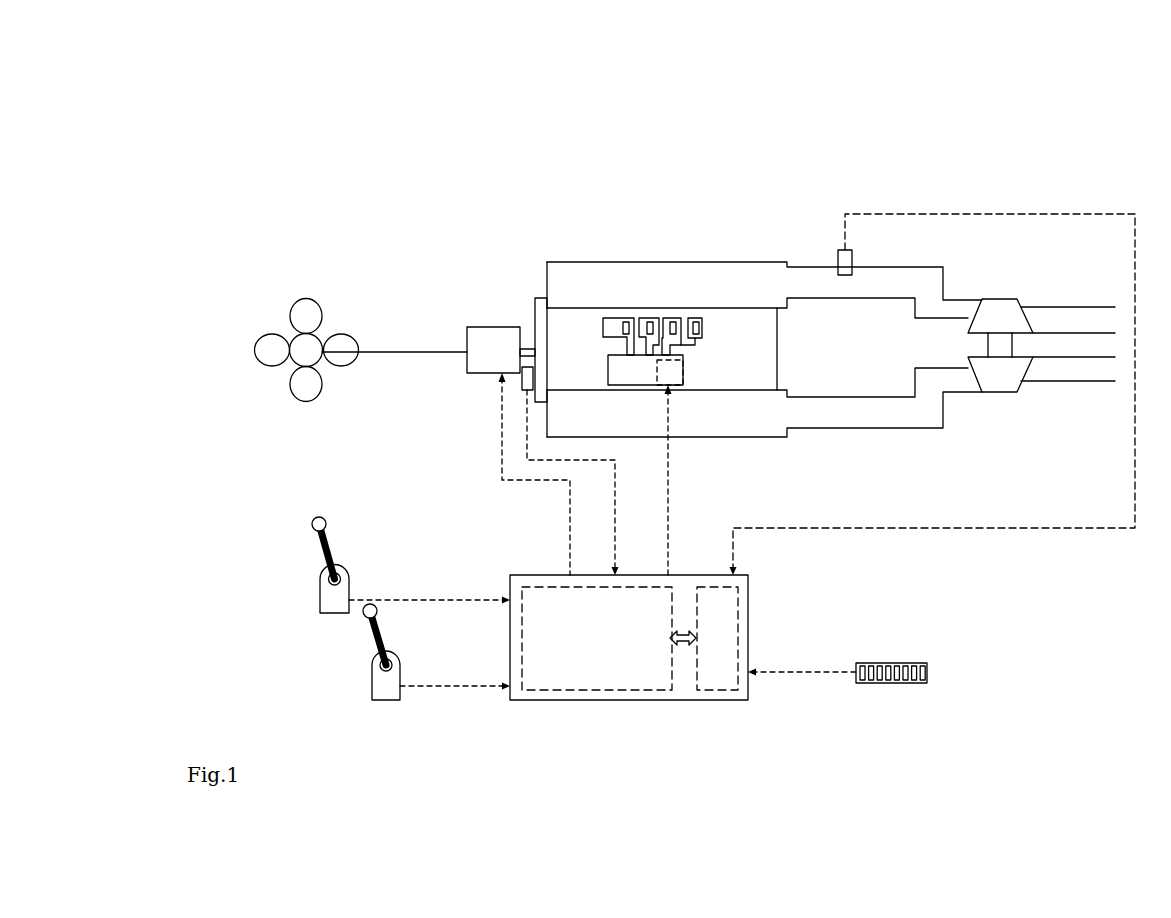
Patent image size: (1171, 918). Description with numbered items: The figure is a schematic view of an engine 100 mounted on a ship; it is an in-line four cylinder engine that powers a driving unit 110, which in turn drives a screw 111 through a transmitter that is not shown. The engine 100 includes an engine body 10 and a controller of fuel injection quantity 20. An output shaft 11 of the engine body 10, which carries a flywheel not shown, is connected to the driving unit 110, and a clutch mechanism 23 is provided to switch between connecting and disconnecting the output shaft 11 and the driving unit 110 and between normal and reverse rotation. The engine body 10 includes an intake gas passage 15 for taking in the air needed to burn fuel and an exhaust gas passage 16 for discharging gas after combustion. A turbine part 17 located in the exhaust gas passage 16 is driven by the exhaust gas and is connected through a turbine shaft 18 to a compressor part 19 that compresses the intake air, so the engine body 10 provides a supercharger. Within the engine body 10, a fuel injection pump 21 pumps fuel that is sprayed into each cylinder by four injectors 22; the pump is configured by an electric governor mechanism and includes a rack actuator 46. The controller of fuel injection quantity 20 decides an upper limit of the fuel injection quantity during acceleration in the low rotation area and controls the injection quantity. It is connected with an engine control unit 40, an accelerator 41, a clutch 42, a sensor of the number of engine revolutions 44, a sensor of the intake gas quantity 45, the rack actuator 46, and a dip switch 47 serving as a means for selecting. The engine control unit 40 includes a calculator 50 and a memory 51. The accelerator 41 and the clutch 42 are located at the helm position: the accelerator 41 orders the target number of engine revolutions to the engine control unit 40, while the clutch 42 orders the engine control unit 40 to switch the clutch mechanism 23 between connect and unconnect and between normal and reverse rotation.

The engine 100 is at (933, 355).
The engine body 10 is at (791, 339).
The output shaft 11 is at (526, 347).
The intake gas passage 15 is at (908, 280).
The exhaust gas passage 16 is at (914, 410).
The turbine part 17 is at (997, 382).
The turbine shaft 18 is at (982, 345).
The compressor part 19 is at (999, 312).
The controller of fuel injection quantity 20 is at (538, 510).
The fuel injection pump 21 is at (646, 388).
The injector 22 is at (627, 318).
The clutch mechanism 23 is at (476, 378).
The engine control unit 40 is at (623, 658).
The accelerator 41 is at (320, 603).
The clutch 42 is at (372, 688).
The sensor of a number of revolutions of the engine 44 is at (519, 385).
The sensor of the intake gas quantity 45 is at (838, 260).
The rack actuator 46 is at (689, 361).
The dip switch 47 is at (893, 688).
The calculator 50 is at (592, 690).
The memory 51 is at (749, 605).
The driving unit 110 is at (361, 331).
The screw 111 is at (322, 310).